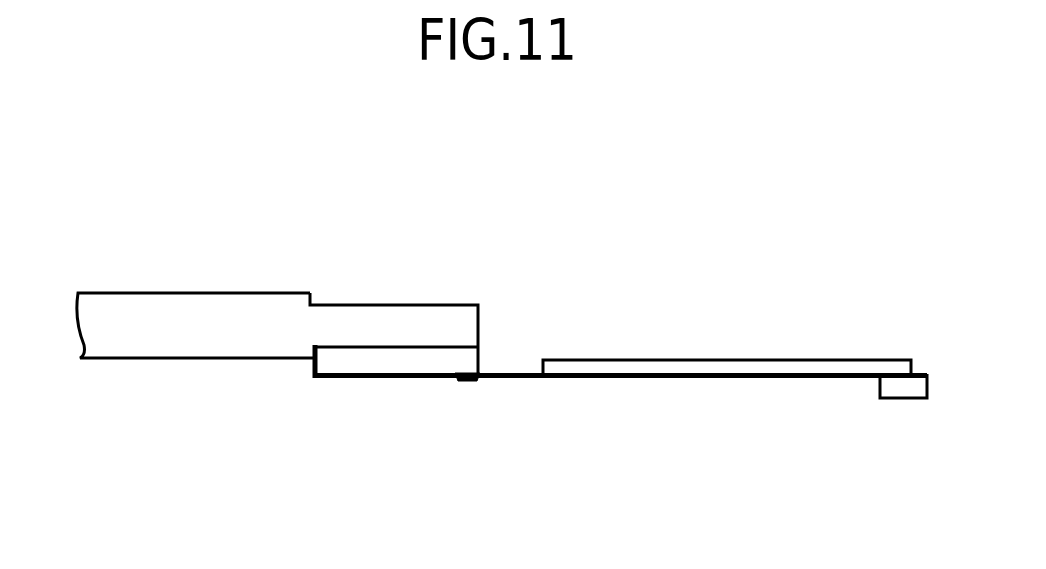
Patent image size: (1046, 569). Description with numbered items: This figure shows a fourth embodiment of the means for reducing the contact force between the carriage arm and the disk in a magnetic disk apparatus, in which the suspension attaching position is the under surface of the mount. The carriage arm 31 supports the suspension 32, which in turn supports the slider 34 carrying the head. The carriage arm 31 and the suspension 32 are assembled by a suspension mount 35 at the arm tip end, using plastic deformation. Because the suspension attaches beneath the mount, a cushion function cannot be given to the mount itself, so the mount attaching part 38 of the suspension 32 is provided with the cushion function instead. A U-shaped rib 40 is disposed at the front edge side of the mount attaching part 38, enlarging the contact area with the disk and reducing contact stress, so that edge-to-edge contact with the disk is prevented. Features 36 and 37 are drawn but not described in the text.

The carriage arm 31 is at (228, 292).
The suspension 32 is at (597, 372).
The slider 34 is at (893, 385).
The suspension mount 35 is at (354, 375).
The substrate surface region 36 is at (510, 364).
The waveguide layer 37 is at (697, 360).
The mount attaching part 38 is at (407, 372).
The U-shaped rib 40 is at (463, 381).